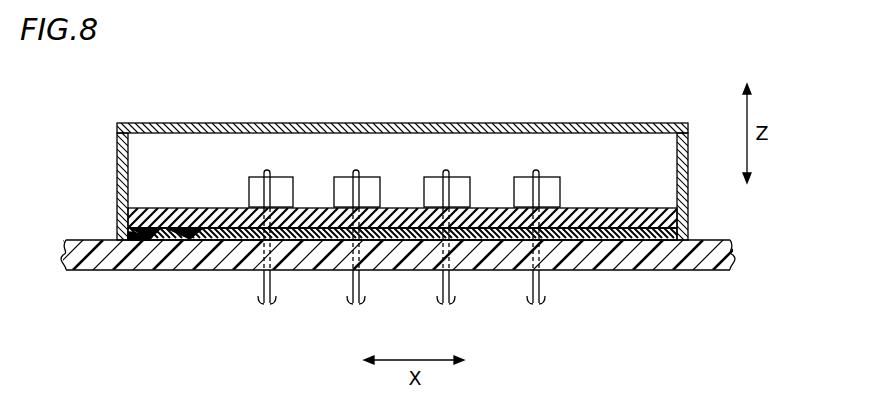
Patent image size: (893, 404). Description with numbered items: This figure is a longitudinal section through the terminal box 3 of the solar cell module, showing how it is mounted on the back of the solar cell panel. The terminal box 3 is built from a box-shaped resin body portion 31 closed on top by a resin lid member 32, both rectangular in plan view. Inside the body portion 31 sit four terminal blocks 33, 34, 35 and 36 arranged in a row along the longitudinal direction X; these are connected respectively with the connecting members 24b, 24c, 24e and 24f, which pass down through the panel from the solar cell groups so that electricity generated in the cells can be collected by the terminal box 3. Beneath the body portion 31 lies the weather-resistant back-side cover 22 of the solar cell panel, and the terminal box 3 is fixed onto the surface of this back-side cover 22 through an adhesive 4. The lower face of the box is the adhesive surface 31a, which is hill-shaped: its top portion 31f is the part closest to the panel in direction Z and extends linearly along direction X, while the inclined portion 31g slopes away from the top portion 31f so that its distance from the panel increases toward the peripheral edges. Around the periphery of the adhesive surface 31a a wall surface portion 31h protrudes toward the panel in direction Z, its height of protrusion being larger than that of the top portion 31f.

The terminal box 3 is at (52, 77).
The lid member 32 is at (118, 123).
The body portion 31 is at (117, 143).
The adhesive surface 31a is at (148, 316).
The top portion 31f is at (152, 243).
The inclined portion 31g is at (205, 243).
The wall surface portion 31h is at (688, 232).
The adhesive 4 is at (148, 243).
The terminal block 33 is at (283, 182).
The terminal block 34 is at (372, 182).
The terminal block 35 is at (462, 182).
The terminal block 36 is at (548, 182).
The back-side cover 22 is at (704, 258).
The connecting member 24f is at (272, 283).
The connecting member 24c is at (362, 283).
The connecting member 24b is at (452, 283).
The connecting member 24e is at (542, 283).